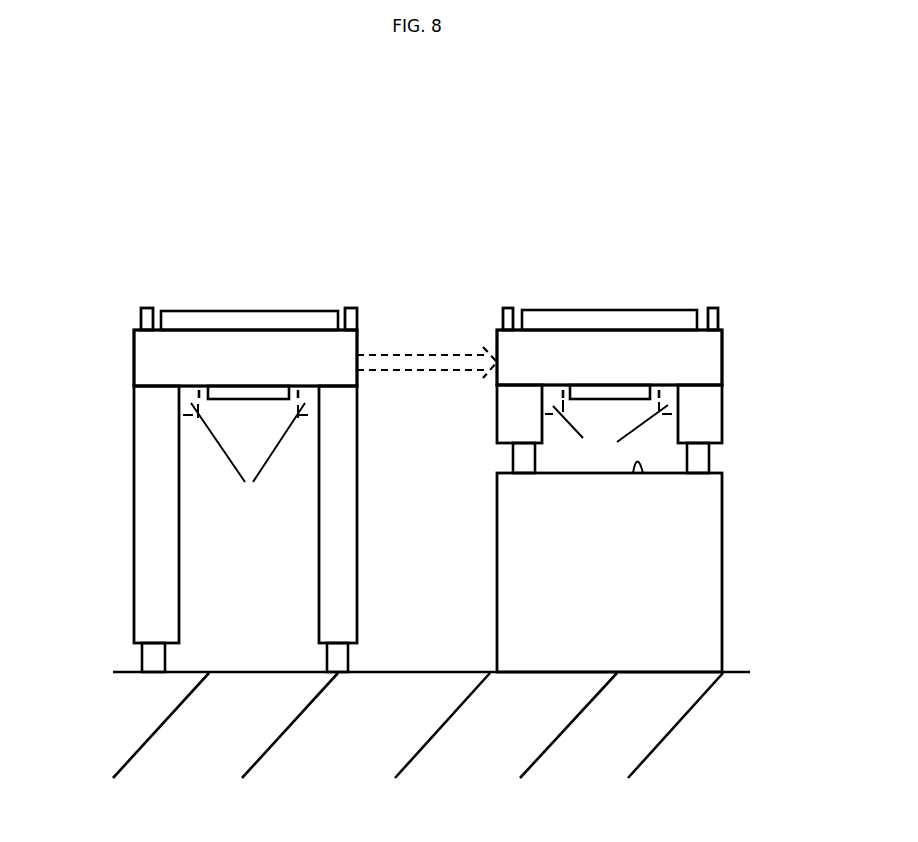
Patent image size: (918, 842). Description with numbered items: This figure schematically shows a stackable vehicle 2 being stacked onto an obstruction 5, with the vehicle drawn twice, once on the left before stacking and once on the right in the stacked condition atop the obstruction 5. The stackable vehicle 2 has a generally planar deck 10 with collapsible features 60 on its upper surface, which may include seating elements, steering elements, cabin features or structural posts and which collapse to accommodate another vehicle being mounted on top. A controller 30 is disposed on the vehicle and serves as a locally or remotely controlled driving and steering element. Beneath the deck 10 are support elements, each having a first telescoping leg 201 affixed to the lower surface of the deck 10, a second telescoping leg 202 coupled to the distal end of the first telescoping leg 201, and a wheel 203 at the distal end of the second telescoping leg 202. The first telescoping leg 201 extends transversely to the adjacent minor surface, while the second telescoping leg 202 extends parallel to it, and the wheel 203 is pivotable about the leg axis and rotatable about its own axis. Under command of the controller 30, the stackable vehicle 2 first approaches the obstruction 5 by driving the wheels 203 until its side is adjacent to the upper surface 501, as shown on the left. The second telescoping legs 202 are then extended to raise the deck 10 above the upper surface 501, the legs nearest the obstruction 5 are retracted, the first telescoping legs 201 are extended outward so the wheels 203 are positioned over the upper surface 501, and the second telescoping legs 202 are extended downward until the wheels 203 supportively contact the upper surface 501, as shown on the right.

The stackable vehicle 2 is at (122, 322).
The deck 10 is at (187, 368).
The collapsible features 60 is at (228, 322).
The controller 30 is at (245, 395).
The first telescoping leg 201 is at (427, 454).
The second telescoping leg 202 is at (346, 549).
The wheel 203 is at (338, 652).
The obstruction 5 is at (607, 604).
The upper surface 501 is at (643, 473).